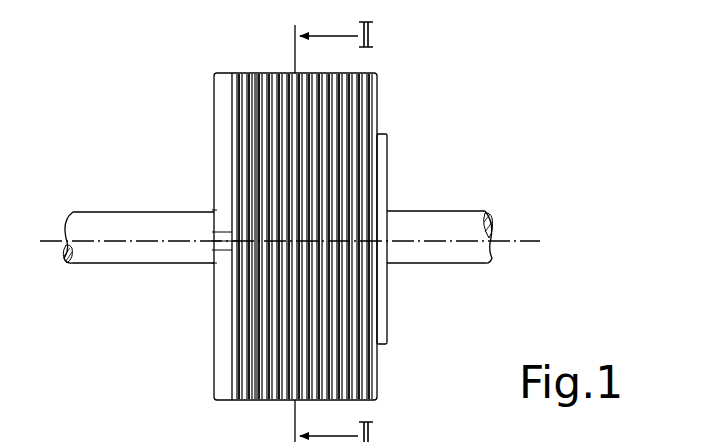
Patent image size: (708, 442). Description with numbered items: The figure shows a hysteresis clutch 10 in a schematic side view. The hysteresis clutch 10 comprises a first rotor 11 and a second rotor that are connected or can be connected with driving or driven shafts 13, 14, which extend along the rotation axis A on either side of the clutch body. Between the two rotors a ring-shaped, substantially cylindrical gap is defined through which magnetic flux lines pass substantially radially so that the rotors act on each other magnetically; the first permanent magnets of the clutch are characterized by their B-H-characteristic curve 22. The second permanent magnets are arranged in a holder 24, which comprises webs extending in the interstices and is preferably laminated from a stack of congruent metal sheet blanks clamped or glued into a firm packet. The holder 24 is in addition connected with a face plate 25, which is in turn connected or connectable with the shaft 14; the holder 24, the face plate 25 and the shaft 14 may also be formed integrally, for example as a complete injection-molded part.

The hysteresis clutch 10 is at (432, 78).
The first rotor 11 is at (395, 193).
The driving or driven shaft 13 is at (436, 252).
The driving or driven shaft 14 is at (143, 252).
The B-H-characteristic curve of the first permanent magnets 22 is at (196, 187).
The holder 24 is at (266, 382).
The face plate 25 is at (219, 105).
The rotation axis A is at (521, 242).